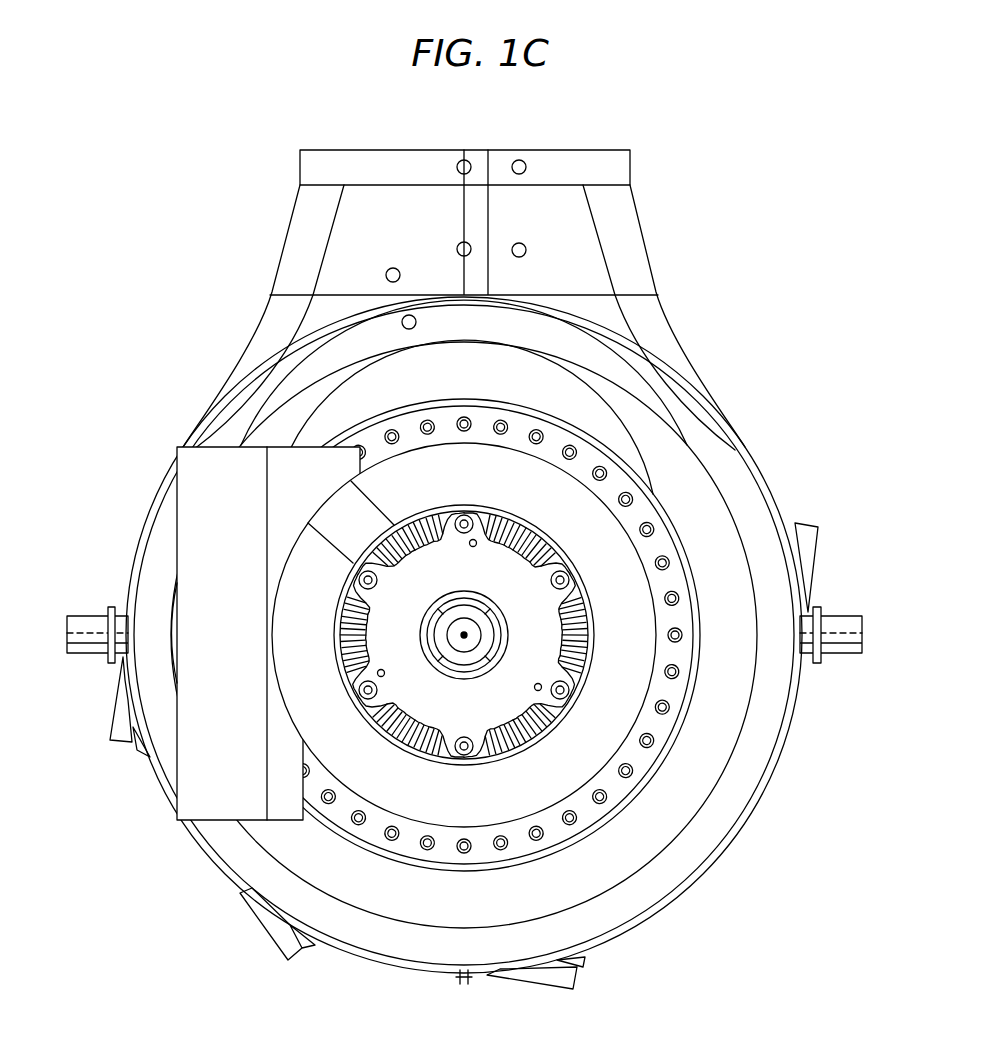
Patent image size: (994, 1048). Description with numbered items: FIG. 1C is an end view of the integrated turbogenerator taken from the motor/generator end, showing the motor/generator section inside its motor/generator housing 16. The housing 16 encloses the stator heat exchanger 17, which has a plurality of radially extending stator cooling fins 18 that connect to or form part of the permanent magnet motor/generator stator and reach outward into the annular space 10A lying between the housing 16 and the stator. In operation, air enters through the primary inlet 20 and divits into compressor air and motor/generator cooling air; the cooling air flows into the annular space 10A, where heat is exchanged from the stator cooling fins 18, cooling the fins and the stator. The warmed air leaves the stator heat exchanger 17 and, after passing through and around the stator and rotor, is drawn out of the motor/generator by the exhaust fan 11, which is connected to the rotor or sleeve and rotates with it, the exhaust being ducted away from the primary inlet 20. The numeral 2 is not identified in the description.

The motor assembly mounting bracket 2 is at (602, 143).
The annular space 10A is at (583, 637).
The exhaust fan 11 is at (440, 667).
The motor/generator housing 16 is at (548, 722).
The stator heat exchanger 17 is at (593, 597).
The stator cooling fins 18 is at (537, 536).
The primary inlet 20 is at (433, 480).